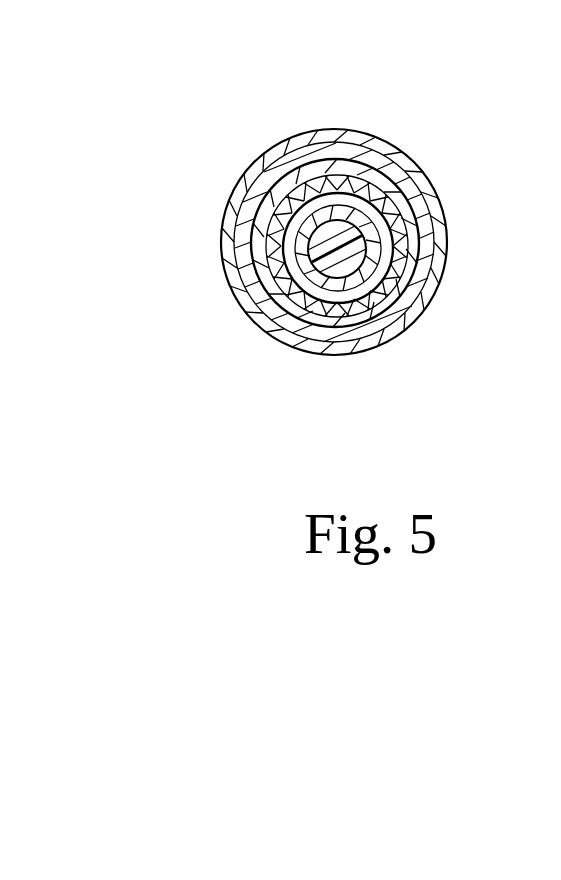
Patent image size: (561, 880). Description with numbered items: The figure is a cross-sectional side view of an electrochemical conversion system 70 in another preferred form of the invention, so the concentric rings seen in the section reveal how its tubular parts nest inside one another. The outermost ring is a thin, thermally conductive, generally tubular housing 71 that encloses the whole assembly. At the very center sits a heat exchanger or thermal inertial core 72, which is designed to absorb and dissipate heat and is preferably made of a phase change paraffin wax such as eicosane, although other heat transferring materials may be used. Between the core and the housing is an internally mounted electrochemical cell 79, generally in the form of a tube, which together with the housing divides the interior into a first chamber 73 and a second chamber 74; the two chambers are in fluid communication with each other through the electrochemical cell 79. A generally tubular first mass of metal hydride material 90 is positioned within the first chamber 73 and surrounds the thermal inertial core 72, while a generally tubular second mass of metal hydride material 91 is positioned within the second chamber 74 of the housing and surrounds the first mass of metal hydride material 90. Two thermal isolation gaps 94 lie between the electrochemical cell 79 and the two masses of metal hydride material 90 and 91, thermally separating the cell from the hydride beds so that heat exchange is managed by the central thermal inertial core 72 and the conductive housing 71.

The electrochemical conversion system 70 is at (281, 93).
The housing 71 is at (418, 168).
The thermal inertial core 72 is at (452, 236).
The first chamber 73 is at (428, 300).
The second chamber 74 is at (395, 327).
The electrochemical cell 79 is at (360, 320).
The first mass of metal hydride material 90 is at (238, 287).
The second mass of metal hydride material 91 is at (255, 209).
The thermal isolation gaps 94 is at (280, 214).